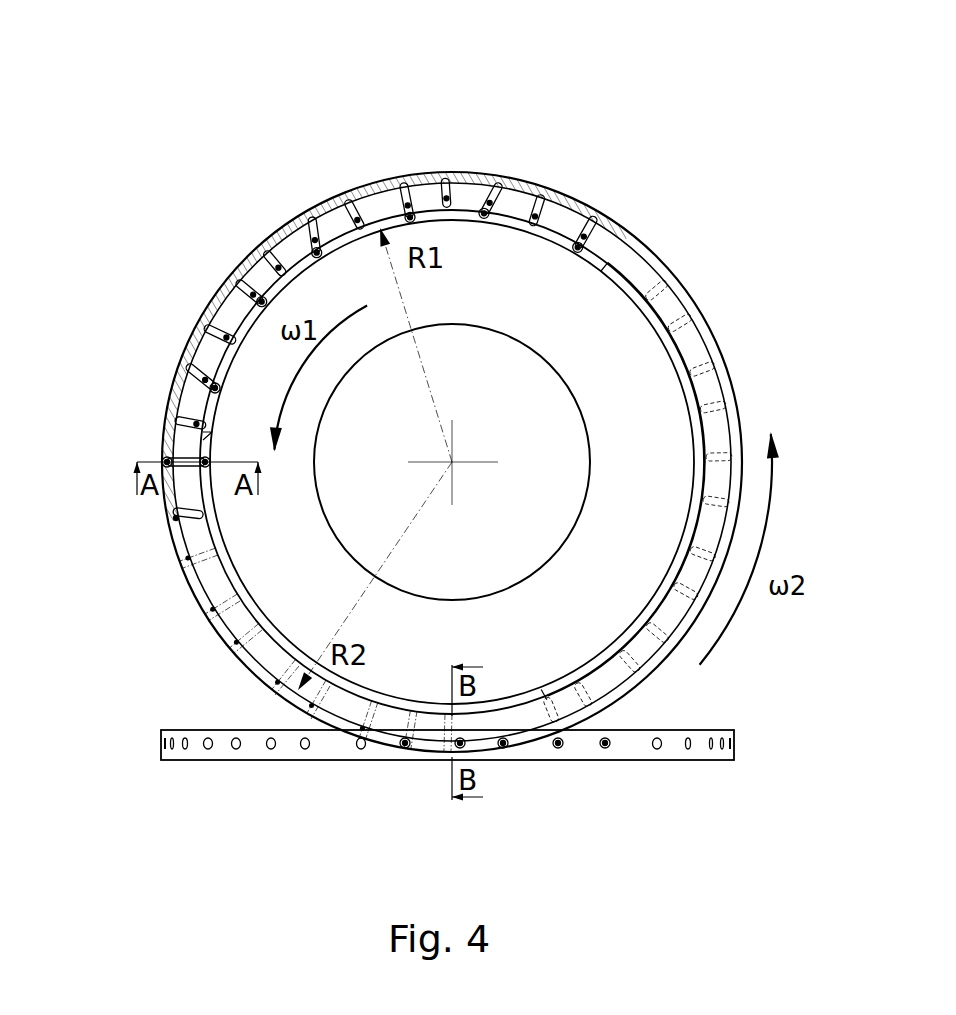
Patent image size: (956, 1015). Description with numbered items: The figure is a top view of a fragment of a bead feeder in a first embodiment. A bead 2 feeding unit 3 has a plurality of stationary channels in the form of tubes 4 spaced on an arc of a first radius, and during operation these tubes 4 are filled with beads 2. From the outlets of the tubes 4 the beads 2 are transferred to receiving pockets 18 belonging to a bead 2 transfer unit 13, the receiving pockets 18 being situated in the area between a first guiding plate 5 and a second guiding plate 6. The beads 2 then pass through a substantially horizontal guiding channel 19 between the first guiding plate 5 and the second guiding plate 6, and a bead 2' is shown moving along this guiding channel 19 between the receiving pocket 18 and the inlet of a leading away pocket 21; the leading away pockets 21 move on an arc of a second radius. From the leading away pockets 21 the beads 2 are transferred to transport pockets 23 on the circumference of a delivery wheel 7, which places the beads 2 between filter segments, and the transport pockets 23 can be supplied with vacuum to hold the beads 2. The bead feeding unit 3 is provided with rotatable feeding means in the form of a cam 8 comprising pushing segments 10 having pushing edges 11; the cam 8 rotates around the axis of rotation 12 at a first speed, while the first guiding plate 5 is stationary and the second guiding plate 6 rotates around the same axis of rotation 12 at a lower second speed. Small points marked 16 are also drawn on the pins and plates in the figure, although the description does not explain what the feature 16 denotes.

The bead 2 is at (137, 440).
The bead 2' is at (182, 289).
The bead feeding unit 3 is at (275, 149).
The tubes 4 is at (560, 200).
The first guiding plate 5 is at (667, 305).
The second guiding plate 6 is at (372, 205).
The delivery wheel 7 is at (265, 762).
The cam 8 is at (245, 553).
The pushing segments 10 is at (188, 366).
The pushing edges 11 is at (176, 421).
The axis of rotation 12 is at (452, 462).
The bead transfer unit 13 is at (190, 223).
The pivot point 16 is at (340, 215).
The receiving pockets 18 is at (410, 215).
The guiding channel 19 is at (300, 212).
The leading away pockets 21 is at (350, 200).
The transport pockets 23 is at (210, 745).